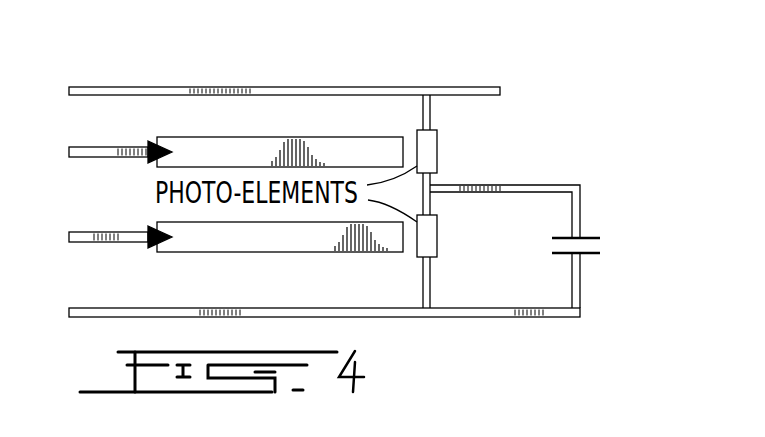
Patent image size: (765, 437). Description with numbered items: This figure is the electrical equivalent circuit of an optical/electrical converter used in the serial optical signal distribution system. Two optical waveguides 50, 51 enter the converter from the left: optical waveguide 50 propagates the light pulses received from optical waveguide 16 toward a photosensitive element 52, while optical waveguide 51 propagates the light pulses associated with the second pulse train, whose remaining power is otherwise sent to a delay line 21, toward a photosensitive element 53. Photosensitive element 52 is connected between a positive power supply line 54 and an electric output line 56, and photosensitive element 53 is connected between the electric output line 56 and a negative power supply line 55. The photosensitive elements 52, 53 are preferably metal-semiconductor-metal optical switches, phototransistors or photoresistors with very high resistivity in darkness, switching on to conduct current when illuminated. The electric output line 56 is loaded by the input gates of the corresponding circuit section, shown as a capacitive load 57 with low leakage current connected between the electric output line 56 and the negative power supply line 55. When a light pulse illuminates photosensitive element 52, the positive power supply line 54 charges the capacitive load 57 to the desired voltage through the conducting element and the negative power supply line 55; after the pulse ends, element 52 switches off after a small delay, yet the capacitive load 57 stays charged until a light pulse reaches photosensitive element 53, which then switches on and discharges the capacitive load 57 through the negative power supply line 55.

The optical waveguide 16 is at (88, 152).
The delay line 21 is at (83, 241).
The optical waveguide 50 is at (218, 146).
The optical waveguide 51 is at (193, 240).
The photosensitive element 52 is at (432, 157).
The photosensitive element 53 is at (437, 239).
The positive power supply line 54 is at (462, 86).
The negative power supply line 55 is at (545, 318).
The electric output line 56 is at (538, 184).
The capacitive load 57 is at (600, 247).